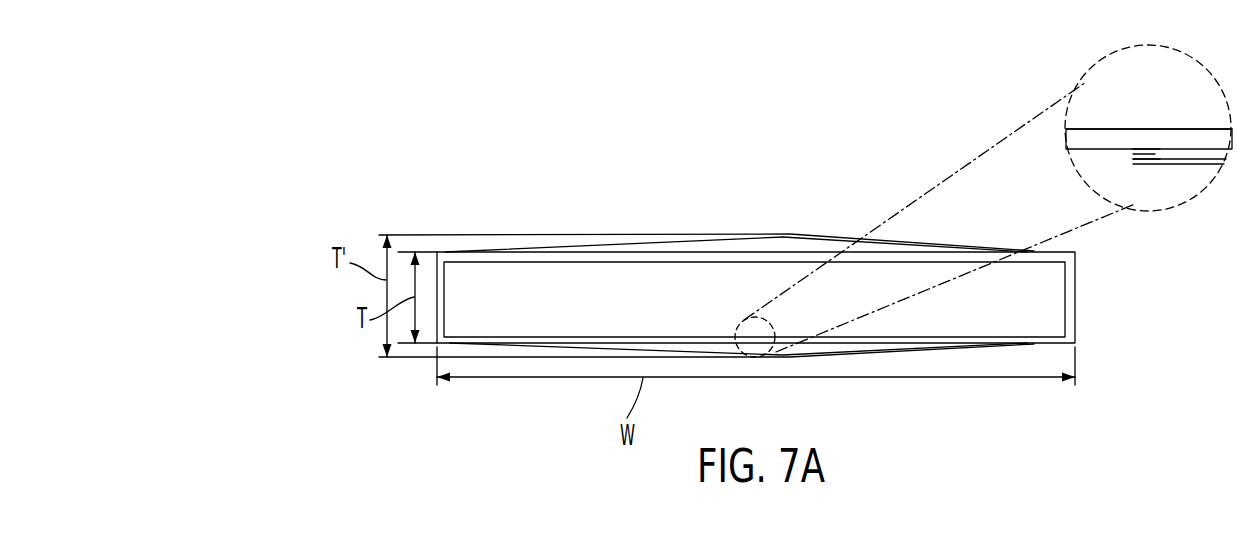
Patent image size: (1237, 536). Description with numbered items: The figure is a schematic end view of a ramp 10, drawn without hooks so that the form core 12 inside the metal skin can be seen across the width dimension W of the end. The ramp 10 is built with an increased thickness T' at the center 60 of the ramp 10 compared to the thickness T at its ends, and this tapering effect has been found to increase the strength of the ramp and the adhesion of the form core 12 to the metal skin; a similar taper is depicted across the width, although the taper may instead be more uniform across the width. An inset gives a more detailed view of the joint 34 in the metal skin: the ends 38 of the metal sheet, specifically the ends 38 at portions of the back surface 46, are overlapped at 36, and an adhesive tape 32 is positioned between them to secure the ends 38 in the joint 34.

The ramp 10 is at (435, 200).
The form core 12 is at (694, 302).
The adhesive tape 32 is at (1142, 162).
The joint 34 is at (772, 329).
The overlap 36 is at (1160, 125).
The ends of the metal sheet 38 is at (1145, 150).
The back surface 46 is at (873, 348).
The center of the ramp 60 is at (749, 205).